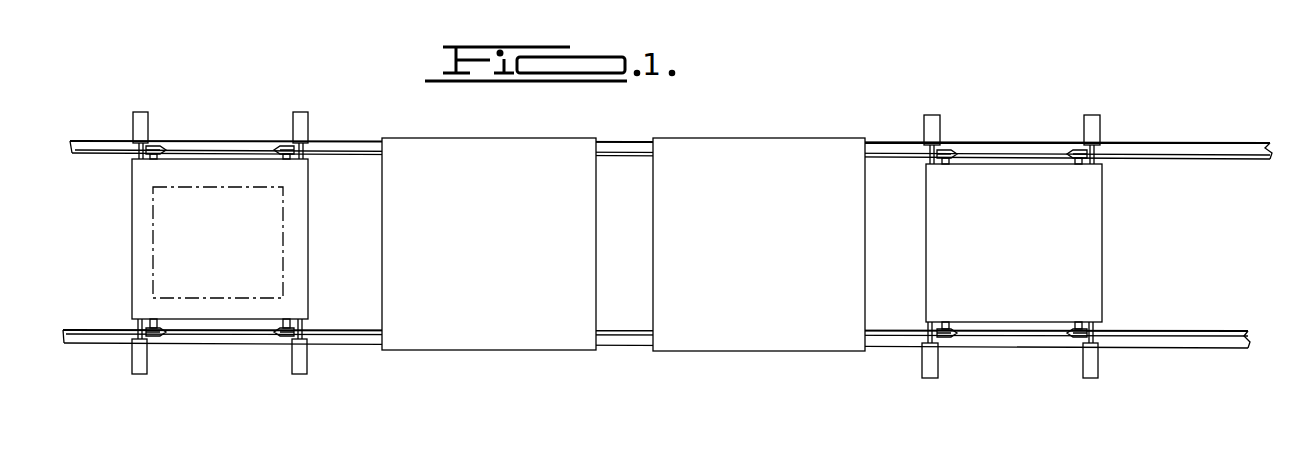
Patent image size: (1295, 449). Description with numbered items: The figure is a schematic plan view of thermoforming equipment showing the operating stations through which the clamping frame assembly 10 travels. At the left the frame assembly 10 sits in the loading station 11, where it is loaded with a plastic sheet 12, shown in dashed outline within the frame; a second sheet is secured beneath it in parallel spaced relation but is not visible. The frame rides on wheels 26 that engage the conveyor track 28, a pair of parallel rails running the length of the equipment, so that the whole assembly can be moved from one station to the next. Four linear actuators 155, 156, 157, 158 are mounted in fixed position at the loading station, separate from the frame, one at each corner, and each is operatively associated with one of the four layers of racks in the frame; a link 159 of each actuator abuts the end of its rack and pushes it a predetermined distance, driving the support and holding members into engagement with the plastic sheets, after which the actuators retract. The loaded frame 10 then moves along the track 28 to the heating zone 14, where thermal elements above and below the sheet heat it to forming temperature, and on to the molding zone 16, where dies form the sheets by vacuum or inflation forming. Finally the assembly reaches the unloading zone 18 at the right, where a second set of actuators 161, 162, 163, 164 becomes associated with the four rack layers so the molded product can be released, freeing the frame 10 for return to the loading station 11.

The clamping frame assembly 10 is at (617, 246).
The loading station 11 is at (212, 172).
The plastic sheet 12 is at (270, 230).
The heating zone 14 is at (448, 155).
The molding zone 16 is at (756, 156).
The unloading zone 18 is at (1007, 145).
The wheels 26 is at (286, 150).
The conveyor track 28 is at (667, 220).
The linear actuator 155 is at (143, 123).
The linear actuator 156 is at (306, 118).
The linear actuator 157 is at (305, 372).
The linear actuator 158 is at (145, 370).
The link 159 is at (138, 157).
The actuator 161 is at (930, 122).
The actuator 162 is at (1093, 120).
The actuator 163 is at (1093, 372).
The actuator 164 is at (932, 373).